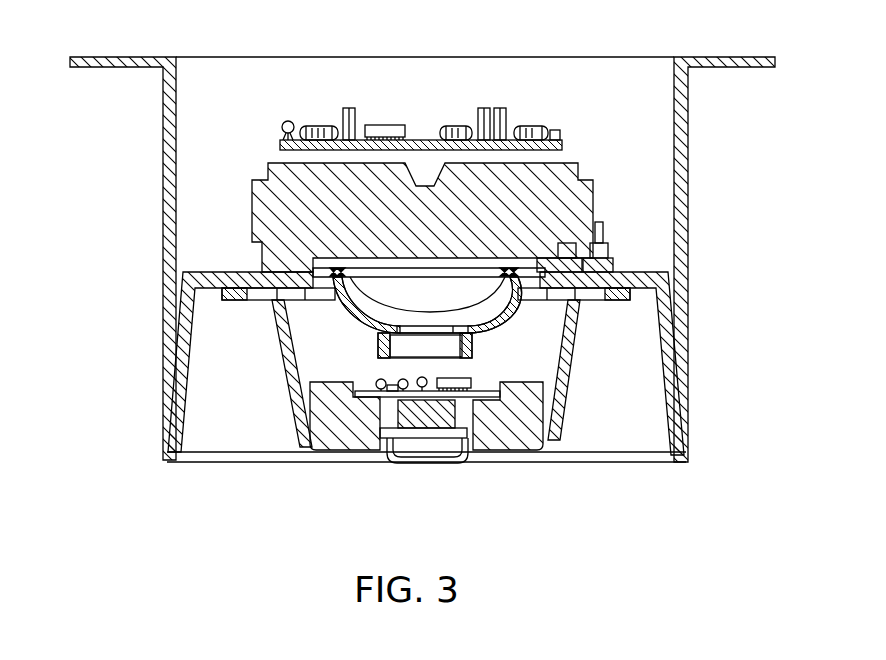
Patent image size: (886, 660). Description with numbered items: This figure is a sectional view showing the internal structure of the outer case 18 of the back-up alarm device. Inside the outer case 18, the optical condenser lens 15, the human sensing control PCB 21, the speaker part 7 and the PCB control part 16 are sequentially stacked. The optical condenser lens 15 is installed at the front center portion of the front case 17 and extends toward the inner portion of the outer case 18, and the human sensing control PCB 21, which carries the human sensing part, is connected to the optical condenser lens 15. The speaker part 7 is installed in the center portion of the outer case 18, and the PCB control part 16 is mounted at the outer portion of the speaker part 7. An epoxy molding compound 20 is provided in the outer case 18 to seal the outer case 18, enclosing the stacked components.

The speaker part 7 is at (598, 199).
The optical condenser lens 15 is at (400, 466).
The PCB control part 16 is at (421, 140).
The front case 17 is at (558, 430).
The outer case 18 is at (690, 284).
The epoxy molding compound 20 is at (596, 99).
The human sensing control PCB 21 is at (378, 396).